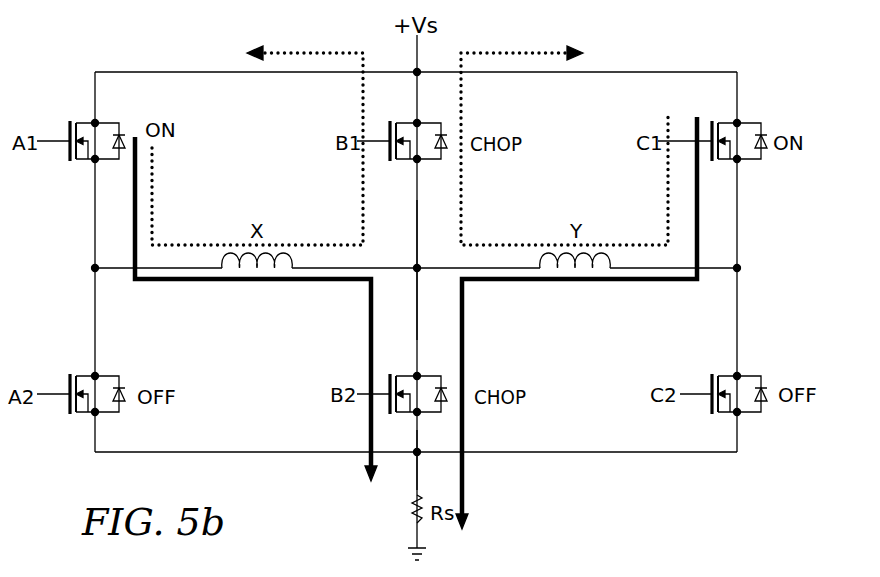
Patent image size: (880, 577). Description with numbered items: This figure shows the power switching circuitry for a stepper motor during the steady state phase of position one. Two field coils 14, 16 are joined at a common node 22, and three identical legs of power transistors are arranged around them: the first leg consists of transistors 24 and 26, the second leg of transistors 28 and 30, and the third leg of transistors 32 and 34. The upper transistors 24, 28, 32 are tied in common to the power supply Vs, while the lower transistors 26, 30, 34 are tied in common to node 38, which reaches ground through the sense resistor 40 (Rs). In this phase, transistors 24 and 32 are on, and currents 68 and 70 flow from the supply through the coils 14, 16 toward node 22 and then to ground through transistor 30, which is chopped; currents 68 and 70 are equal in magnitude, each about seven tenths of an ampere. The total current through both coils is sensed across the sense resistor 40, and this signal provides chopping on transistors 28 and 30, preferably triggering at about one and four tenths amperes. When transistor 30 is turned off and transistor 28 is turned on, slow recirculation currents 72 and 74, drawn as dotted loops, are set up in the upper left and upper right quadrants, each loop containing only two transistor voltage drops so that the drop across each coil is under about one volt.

The coil 14 is at (297, 246).
The coil 16 is at (537, 246).
The common node 22 is at (418, 266).
The transistor 24 is at (69, 124).
The transistor 26 is at (69, 378).
The transistor 28 is at (394, 163).
The transistor 30 is at (394, 375).
The transistor 32 is at (714, 163).
The transistor 34 is at (711, 379).
The node 38 is at (420, 456).
The sense resistor 40 is at (411, 507).
The current 68 is at (182, 282).
The current 70 is at (621, 282).
The recirculation current 72 is at (154, 183).
The recirculation current 74 is at (665, 176).